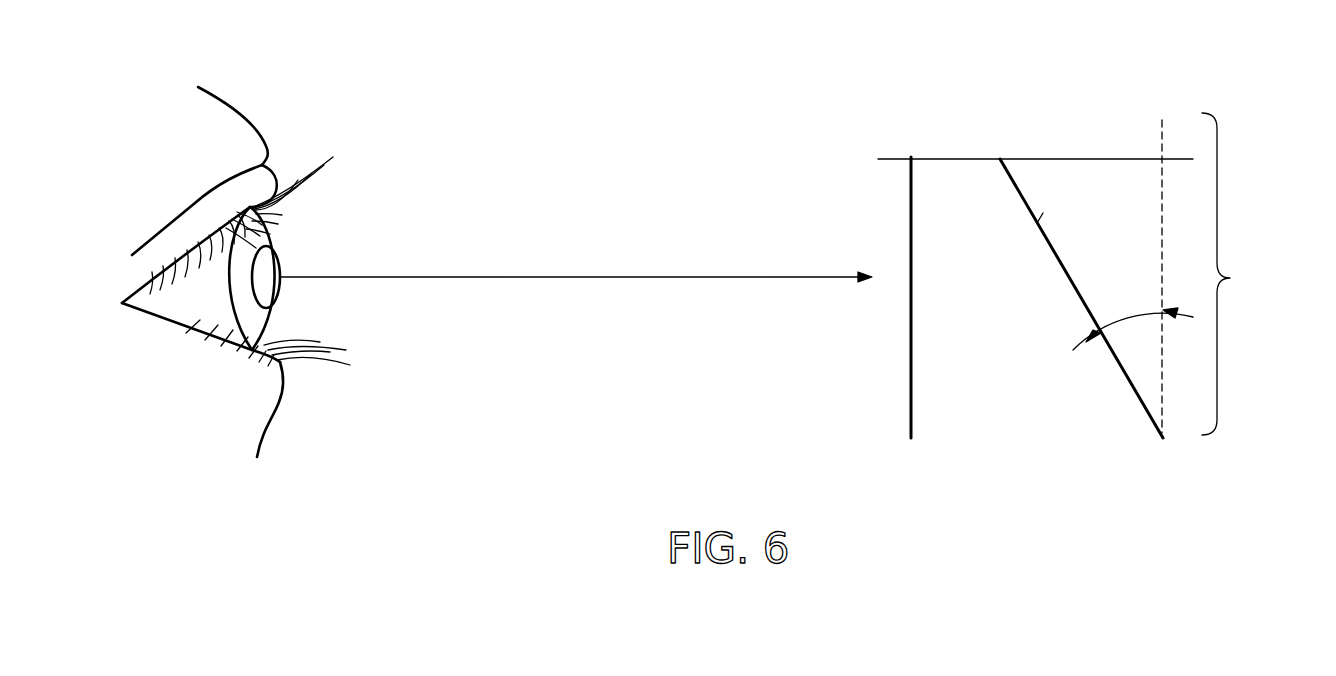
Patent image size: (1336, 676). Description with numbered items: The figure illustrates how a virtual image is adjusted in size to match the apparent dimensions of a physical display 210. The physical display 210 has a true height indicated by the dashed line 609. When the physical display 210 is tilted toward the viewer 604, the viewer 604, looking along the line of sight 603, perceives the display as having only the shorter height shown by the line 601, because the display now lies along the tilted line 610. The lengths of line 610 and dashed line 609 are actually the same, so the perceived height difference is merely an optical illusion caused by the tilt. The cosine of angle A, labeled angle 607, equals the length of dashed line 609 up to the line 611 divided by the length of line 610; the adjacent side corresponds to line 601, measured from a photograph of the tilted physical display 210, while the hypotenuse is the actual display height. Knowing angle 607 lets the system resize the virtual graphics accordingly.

The viewer 604 is at (190, 213).
The line of sight 603 is at (600, 277).
The line 611 is at (937, 158).
The line 601 is at (910, 375).
The line 610 is at (1026, 178).
The physical display 210 is at (1046, 224).
The angle A 607 is at (1123, 313).
The dashed line 609 is at (1246, 274).